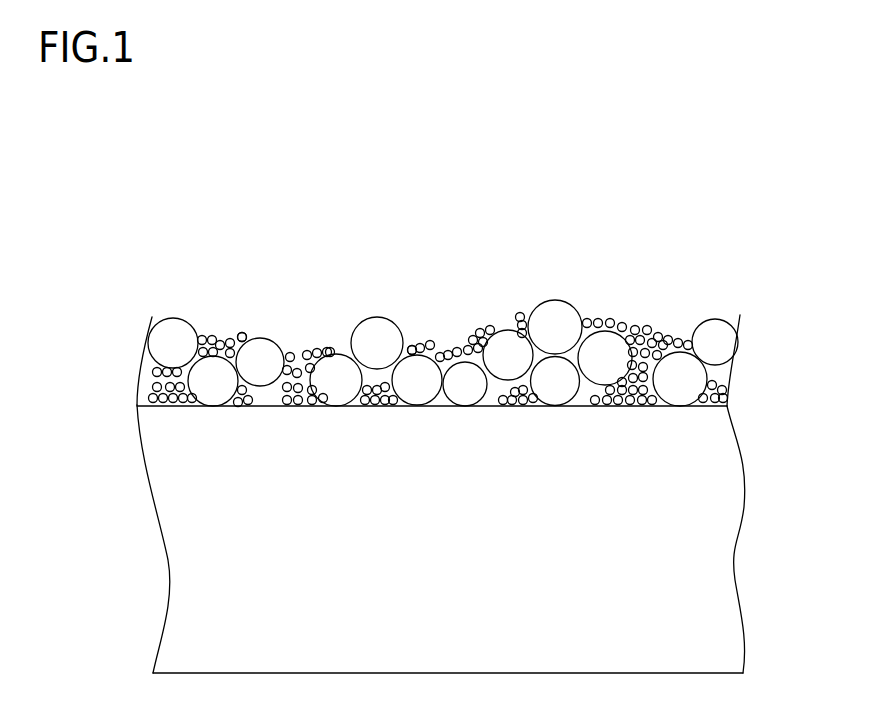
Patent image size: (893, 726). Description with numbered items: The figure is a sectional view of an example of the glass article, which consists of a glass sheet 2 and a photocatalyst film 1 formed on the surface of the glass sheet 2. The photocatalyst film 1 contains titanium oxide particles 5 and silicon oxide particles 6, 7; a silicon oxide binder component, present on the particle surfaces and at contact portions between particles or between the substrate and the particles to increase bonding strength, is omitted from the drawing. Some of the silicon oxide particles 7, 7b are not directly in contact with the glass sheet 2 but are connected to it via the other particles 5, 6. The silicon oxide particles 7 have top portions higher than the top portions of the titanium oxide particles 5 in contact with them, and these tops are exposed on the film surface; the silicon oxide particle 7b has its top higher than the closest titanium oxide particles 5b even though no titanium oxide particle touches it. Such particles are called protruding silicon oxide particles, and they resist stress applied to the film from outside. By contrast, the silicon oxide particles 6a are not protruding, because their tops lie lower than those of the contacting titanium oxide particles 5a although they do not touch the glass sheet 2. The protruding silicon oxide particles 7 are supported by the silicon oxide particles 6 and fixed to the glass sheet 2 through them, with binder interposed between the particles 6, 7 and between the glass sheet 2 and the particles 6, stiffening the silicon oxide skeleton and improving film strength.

The photocatalyst film 1 is at (140, 222).
The glass sheet 2 is at (188, 503).
The titanium oxide particles 5 is at (433, 345).
The titanium oxide particles 5a is at (245, 330).
The titanium oxide particles 5b is at (413, 340).
The silicon oxide particles 6 is at (558, 378).
The silicon oxide particles 6a is at (272, 350).
The protruding silicon oxide particles 7 is at (171, 336).
The protruding silicon oxide particle 7b is at (378, 340).